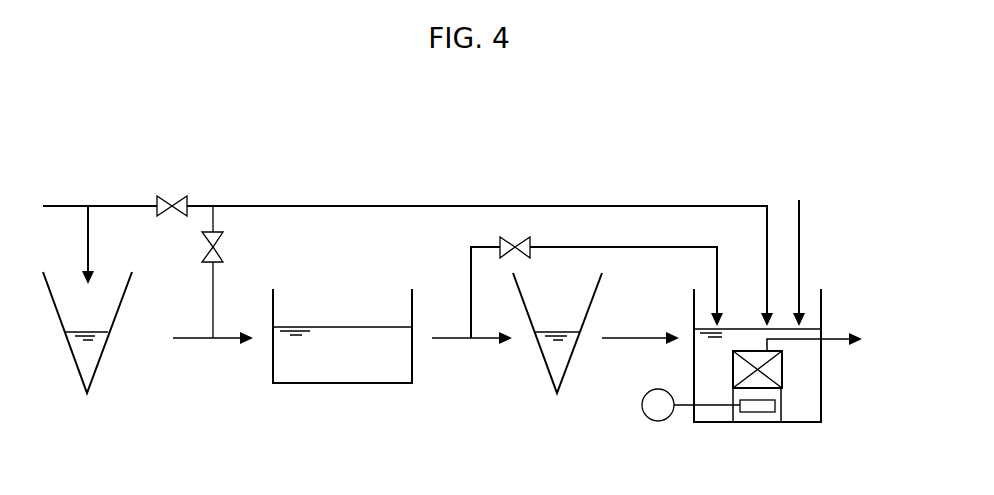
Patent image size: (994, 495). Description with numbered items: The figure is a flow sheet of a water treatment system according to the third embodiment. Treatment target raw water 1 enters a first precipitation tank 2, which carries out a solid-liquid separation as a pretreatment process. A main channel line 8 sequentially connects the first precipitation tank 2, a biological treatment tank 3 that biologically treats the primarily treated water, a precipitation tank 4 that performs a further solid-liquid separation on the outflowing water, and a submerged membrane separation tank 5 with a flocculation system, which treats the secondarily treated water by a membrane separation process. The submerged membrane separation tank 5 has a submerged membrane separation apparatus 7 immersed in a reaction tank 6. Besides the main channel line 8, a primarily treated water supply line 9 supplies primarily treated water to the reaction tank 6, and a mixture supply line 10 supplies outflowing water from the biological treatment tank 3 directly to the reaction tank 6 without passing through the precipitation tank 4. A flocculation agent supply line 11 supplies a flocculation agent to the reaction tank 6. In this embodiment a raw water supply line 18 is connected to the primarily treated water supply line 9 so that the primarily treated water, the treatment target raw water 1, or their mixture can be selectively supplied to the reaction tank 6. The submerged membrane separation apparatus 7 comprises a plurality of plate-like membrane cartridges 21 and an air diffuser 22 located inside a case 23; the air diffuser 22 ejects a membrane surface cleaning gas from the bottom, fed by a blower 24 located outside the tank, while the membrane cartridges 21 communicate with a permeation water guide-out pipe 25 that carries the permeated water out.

The treatment target raw water 1 is at (77, 206).
The raw water supply line 18 is at (133, 206).
The primarily treated water supply line 9 is at (370, 206).
The first precipitation tank 2 is at (103, 355).
The main channel line 8 is at (225, 340).
The biological treatment tank 3 is at (360, 385).
The mixture supply line 10 is at (590, 247).
The precipitation tank 4 is at (541, 355).
The flocculation agent supply line 11 is at (800, 225).
The submerged membrane separation tank with a flocculation system 5 is at (746, 345).
The reaction tank 6 is at (822, 408).
The permeation water guide-out pipe 25 is at (833, 337).
The submerged membrane separation apparatus 7 is at (783, 368).
The membrane cartridges 21 is at (735, 368).
The case 23 is at (783, 400).
The air diffuser 22 is at (757, 410).
The blower 24 is at (655, 421).